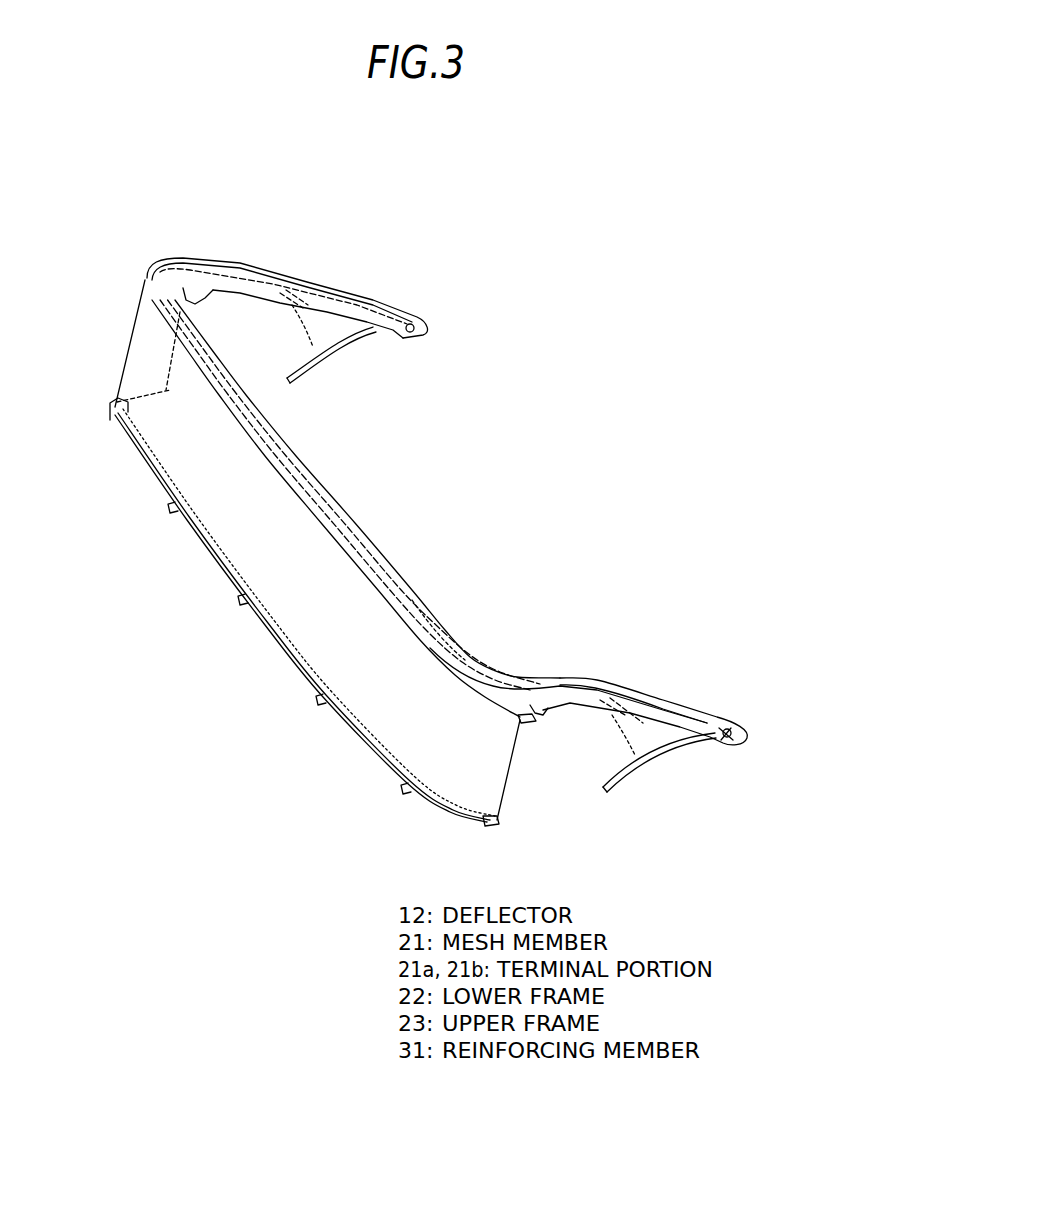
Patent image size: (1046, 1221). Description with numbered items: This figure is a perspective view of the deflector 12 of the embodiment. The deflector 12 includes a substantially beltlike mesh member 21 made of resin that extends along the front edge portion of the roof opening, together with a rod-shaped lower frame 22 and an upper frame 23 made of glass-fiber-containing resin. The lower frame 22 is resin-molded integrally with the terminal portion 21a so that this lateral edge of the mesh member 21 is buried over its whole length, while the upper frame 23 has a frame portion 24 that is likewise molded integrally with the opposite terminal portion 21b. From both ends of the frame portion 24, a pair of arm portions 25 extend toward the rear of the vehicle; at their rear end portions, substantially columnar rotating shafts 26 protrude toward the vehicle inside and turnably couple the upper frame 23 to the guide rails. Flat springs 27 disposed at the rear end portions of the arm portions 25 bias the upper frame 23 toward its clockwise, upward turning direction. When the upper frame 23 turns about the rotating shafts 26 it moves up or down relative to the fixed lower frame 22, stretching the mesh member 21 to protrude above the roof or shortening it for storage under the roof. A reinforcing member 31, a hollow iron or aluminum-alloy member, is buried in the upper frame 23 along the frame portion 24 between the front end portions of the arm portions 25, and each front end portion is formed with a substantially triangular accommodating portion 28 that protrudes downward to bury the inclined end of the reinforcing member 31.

The deflector 12 is at (496, 268).
The mesh member 21 is at (488, 797).
The terminal portion 21a is at (484, 824).
The terminal portion 21b is at (530, 722).
The lower frame 22 is at (366, 738).
The upper frame 23 is at (350, 513).
The frame portion 24 is at (293, 436).
The arm portion 25 is at (332, 283).
The rotating shaft 26 is at (410, 337).
The spring 27 is at (353, 330).
The accommodating portion 28 is at (216, 305).
The reinforcing member 31 is at (472, 668).